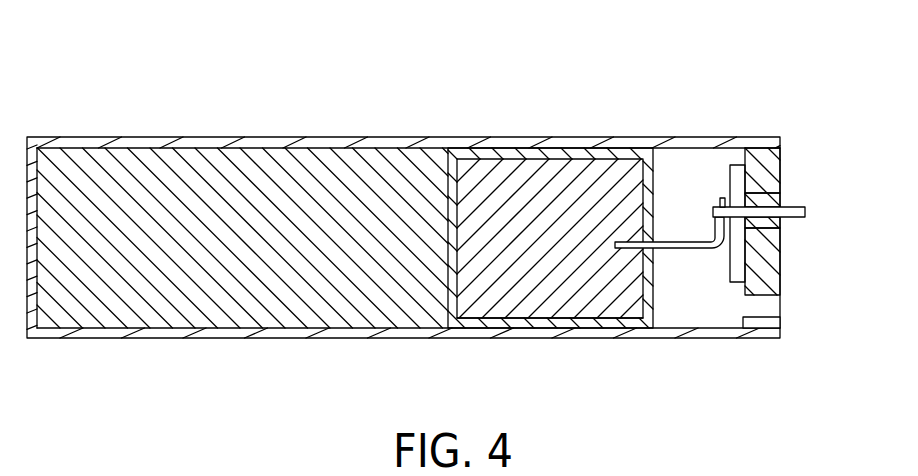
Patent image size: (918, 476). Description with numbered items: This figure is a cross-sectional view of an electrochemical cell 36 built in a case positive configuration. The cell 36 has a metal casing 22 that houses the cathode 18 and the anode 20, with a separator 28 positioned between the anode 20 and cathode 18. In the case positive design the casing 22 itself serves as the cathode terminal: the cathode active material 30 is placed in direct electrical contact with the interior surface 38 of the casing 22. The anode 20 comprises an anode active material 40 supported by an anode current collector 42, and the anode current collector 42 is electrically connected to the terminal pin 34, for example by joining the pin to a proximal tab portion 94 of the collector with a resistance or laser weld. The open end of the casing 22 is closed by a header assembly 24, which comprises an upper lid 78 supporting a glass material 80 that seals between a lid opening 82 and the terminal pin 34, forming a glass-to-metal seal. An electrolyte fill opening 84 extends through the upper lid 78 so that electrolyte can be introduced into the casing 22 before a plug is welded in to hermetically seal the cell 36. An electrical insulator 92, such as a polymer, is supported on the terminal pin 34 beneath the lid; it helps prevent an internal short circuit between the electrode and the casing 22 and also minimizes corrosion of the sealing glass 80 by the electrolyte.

The cell 36 is at (190, 72).
The interior surface 38 is at (37, 220).
The cathode active material 30 is at (147, 180).
The casing 22 is at (243, 147).
The anode 20 is at (513, 162).
The anode current collector 42 is at (692, 242).
The proximal tab portion 94 is at (720, 201).
The electrical insulator 92 is at (738, 166).
The header assembly 24 is at (764, 160).
The lid opening 82 is at (781, 196).
The terminal pin 34 is at (793, 206).
The glass material 80 is at (772, 218).
The upper lid 78 is at (772, 262).
The electrolyte fill opening 84 is at (772, 303).
The cathode 18 is at (118, 300).
The separator 28 is at (452, 322).
The anode active material 40 is at (563, 313).